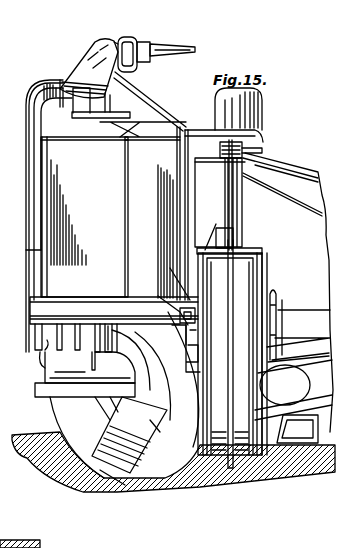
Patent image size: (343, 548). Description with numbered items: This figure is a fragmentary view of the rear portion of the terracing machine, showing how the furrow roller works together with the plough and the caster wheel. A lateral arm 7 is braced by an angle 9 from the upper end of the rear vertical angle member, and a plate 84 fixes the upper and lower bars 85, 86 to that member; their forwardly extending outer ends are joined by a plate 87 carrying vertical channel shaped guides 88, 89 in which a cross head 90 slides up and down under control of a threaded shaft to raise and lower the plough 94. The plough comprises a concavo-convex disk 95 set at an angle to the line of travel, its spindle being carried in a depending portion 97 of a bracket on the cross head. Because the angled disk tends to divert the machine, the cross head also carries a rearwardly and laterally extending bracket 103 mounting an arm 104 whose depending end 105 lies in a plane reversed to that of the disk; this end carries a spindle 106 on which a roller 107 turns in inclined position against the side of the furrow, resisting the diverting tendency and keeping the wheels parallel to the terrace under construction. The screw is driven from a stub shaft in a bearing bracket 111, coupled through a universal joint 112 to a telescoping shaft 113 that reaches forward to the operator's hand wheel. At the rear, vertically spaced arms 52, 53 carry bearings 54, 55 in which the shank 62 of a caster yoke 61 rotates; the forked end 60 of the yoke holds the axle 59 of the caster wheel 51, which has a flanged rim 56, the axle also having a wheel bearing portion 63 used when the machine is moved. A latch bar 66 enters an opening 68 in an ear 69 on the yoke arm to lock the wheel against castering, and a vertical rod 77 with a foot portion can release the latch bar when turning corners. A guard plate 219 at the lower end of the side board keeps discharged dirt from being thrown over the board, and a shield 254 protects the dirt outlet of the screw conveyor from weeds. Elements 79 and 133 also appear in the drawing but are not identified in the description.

The bearing bracket 111 is at (108, 35).
The universal joint 112 is at (152, 52).
The telescoping shaft 113 is at (196, 48).
The upper bar 85 is at (180, 108).
The cylinder 79 is at (218, 118).
The vertical rod 77 is at (176, 168).
The plate 84 is at (164, 205).
The plate 87 is at (28, 284).
The lower bar 86 is at (31, 298).
The bearing 54 is at (197, 160).
The arm 52 is at (246, 152).
The shank 62 is at (240, 210).
The caster yoke 61 is at (212, 231).
The arm 53 is at (238, 234).
The bearing 55 is at (244, 248).
The guard plate 219 is at (312, 170).
The angle 9 is at (300, 176).
The wheel bearing portion 63 is at (279, 300).
The arm 7 is at (312, 318).
The axle 59 is at (302, 340).
The shield 254 is at (296, 443).
The flanged rim 56 is at (205, 470).
The caster wheel 51 is at (248, 470).
The latch bar 66 is at (170, 281).
The ear 69 is at (164, 304).
The opening 68 is at (186, 332).
The forked end 60 is at (190, 350).
The channel shaped guide 88 is at (35, 344).
The cross head 90 is at (42, 360).
The channel shaped guide 89 is at (112, 362).
The bracket 103 is at (45, 397).
The arm 104 is at (62, 398).
The plough 94 is at (60, 420).
The depending end 105 is at (108, 430).
The depending portion 97 is at (160, 394).
The spindle 106 is at (168, 425).
The concavo-convex disk 95 is at (178, 500).
The roller 107 is at (100, 486).
The fragment 133 is at (39, 541).